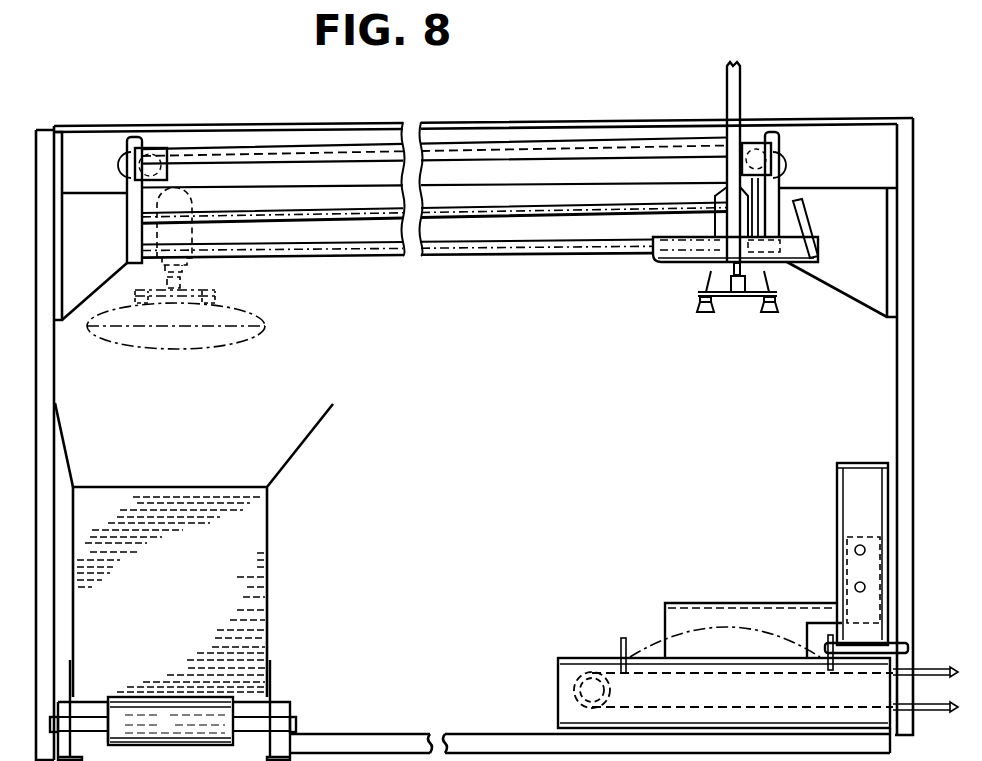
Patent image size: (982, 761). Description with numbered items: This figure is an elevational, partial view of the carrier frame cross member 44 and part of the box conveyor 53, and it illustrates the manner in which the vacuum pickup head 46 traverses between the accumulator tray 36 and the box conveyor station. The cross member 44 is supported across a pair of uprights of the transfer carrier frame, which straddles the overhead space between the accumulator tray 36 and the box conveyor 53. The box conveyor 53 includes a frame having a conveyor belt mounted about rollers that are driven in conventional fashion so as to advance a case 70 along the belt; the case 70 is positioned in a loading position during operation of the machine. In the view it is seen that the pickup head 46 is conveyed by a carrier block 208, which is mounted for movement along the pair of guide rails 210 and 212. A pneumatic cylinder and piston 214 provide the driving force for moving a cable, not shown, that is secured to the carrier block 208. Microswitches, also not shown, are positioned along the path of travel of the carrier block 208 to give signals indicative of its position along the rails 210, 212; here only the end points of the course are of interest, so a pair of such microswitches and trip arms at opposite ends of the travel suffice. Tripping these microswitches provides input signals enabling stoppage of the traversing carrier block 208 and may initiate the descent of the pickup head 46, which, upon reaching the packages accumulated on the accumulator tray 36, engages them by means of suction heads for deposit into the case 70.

The carrier frame cross member 44 is at (472, 122).
The pneumatic cylinder and piston 214 is at (610, 145).
The guide rail 210 is at (482, 256).
The guide rail 212 is at (360, 217).
The carrier block 208 is at (727, 223).
The vacuum pickup head 46 is at (695, 288).
The case 70 is at (238, 583).
The box conveyor 53 is at (300, 710).
The accumulator tray 36 is at (655, 655).